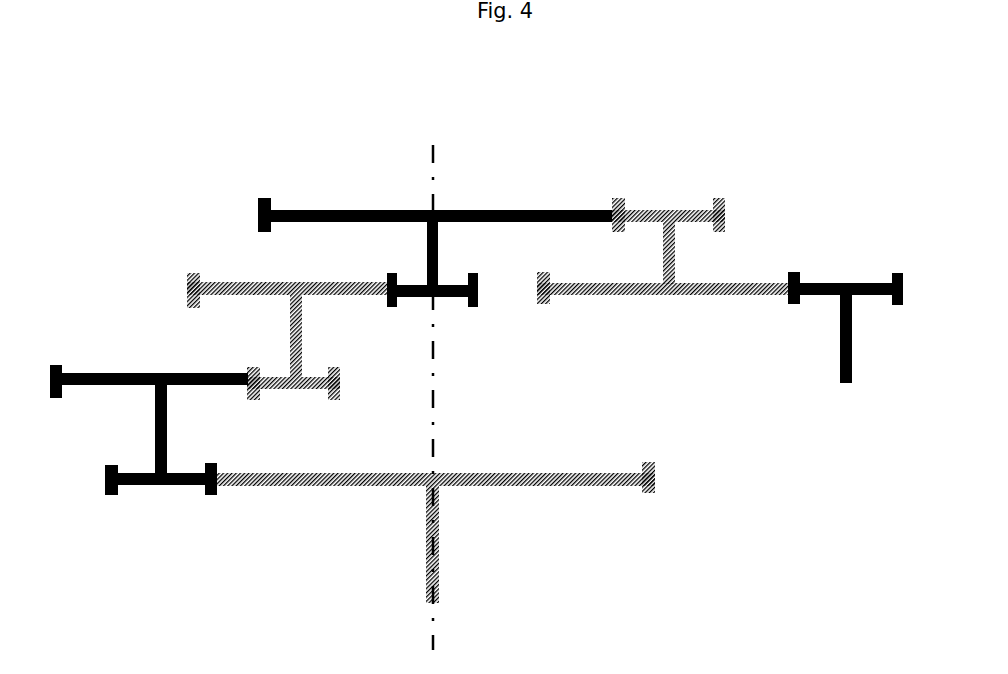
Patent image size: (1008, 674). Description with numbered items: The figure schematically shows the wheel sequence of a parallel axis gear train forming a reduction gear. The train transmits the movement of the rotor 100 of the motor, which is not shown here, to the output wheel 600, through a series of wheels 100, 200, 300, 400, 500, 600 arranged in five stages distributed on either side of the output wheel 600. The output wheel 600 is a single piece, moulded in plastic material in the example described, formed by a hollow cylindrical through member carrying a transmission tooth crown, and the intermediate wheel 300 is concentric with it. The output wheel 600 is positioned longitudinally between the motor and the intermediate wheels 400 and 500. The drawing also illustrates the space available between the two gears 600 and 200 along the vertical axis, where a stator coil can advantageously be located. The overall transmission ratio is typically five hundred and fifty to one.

The rotor 100 is at (857, 253).
The gear 200 is at (667, 195).
The intermediate wheel 300 is at (387, 193).
The intermediate wheel 400 is at (218, 268).
The intermediate wheel 500 is at (117, 362).
The output wheel 600 is at (497, 502).